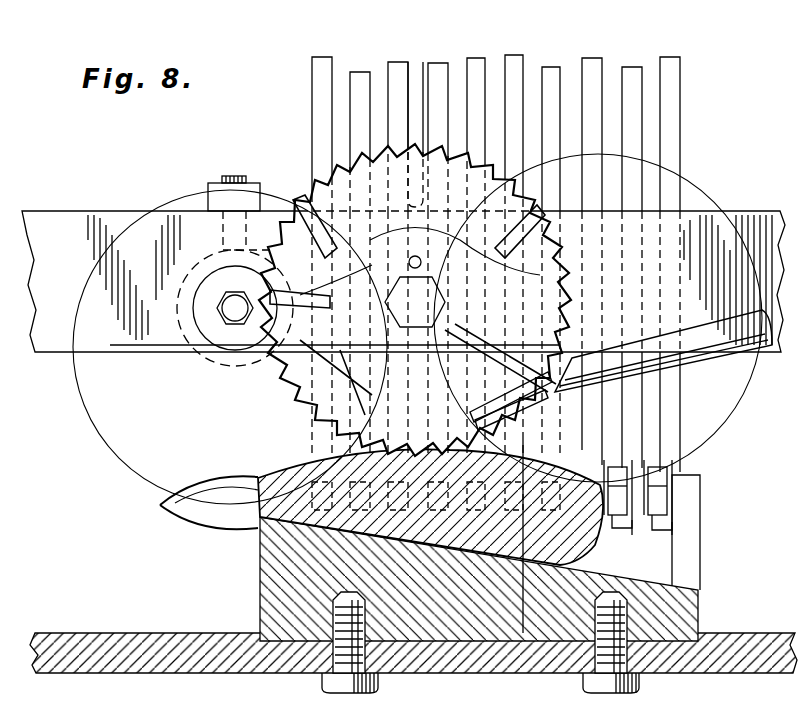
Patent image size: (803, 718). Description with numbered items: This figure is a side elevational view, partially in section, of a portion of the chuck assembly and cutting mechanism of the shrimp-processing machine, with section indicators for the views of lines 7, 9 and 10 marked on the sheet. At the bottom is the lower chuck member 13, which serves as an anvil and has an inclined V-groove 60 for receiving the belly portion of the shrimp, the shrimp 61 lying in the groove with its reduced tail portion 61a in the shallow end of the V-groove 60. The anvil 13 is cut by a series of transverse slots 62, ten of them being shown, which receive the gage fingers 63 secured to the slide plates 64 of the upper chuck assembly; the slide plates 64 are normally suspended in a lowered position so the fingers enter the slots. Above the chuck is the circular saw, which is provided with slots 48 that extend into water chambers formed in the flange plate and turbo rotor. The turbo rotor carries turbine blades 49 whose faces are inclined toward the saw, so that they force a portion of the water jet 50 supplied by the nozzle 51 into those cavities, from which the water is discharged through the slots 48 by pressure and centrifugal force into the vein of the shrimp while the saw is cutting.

The lower chuck member 13 is at (700, 615).
The slots 48 is at (545, 232).
The turbine blades 49 is at (522, 306).
The water jet 50 is at (505, 378).
The nozzle 51 is at (568, 396).
The V-groove 60 is at (682, 585).
The cam 61 is at (586, 540).
The tail portion 61a is at (183, 524).
The transverse slots 62 is at (652, 532).
The gage fingers 63 is at (680, 476).
The slide plates 64 is at (678, 88).
The section line 7 is at (437, 698).
The section line 9 is at (523, 688).
The section line 10 is at (640, 673).